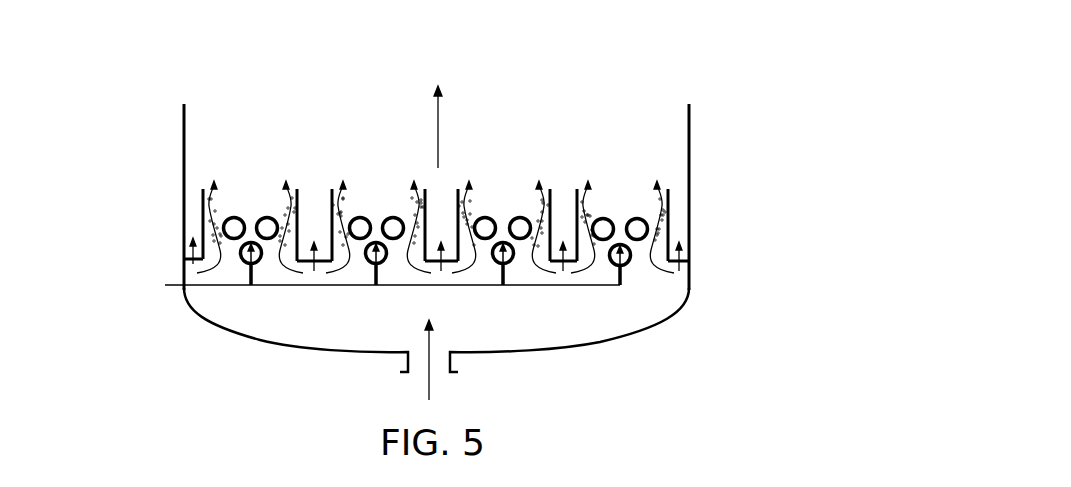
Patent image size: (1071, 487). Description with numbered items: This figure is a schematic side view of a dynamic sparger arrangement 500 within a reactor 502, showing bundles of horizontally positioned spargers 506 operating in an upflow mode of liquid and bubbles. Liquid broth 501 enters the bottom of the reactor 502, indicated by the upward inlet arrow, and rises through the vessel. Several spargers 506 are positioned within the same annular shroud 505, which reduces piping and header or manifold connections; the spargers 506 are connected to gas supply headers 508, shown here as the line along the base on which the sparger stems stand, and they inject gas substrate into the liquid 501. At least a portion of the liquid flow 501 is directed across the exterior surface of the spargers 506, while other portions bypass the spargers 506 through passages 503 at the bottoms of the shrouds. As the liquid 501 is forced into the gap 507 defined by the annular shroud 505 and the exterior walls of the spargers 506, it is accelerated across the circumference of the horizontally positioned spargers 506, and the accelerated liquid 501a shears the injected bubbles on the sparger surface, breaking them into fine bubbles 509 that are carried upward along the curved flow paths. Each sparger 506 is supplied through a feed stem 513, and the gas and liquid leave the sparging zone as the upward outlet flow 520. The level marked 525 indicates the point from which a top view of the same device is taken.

The electrolytic cell apparatus 500 is at (637, 57).
The liquid broth 501 is at (438, 345).
The accelerated liquid 501a is at (592, 192).
The reactor 502 is at (690, 167).
The passages 503 is at (308, 267).
The annular shroud 505 is at (333, 187).
The spargers 506 is at (523, 216).
The gap 507 is at (228, 203).
The gas supply/headers 508 is at (172, 288).
The fine bubbles 509 is at (348, 215).
The electrode with feed rod 513 is at (507, 273).
The gas outlet flow 520 is at (448, 120).
The point 525 is at (184, 105).